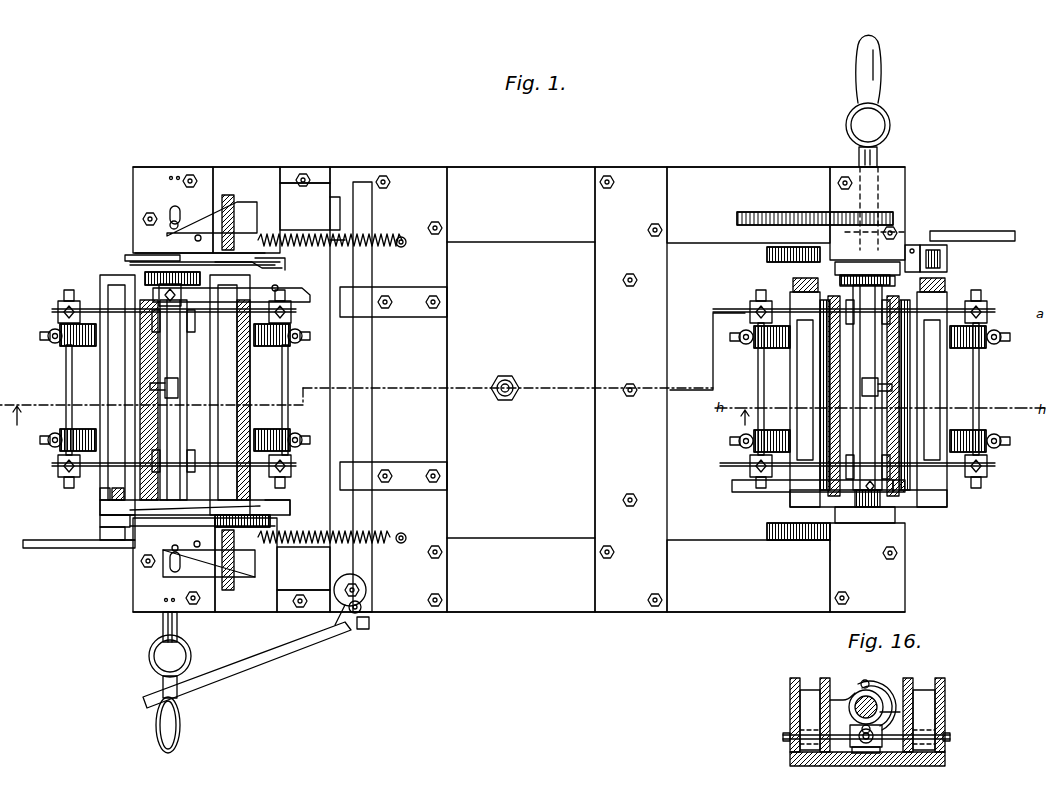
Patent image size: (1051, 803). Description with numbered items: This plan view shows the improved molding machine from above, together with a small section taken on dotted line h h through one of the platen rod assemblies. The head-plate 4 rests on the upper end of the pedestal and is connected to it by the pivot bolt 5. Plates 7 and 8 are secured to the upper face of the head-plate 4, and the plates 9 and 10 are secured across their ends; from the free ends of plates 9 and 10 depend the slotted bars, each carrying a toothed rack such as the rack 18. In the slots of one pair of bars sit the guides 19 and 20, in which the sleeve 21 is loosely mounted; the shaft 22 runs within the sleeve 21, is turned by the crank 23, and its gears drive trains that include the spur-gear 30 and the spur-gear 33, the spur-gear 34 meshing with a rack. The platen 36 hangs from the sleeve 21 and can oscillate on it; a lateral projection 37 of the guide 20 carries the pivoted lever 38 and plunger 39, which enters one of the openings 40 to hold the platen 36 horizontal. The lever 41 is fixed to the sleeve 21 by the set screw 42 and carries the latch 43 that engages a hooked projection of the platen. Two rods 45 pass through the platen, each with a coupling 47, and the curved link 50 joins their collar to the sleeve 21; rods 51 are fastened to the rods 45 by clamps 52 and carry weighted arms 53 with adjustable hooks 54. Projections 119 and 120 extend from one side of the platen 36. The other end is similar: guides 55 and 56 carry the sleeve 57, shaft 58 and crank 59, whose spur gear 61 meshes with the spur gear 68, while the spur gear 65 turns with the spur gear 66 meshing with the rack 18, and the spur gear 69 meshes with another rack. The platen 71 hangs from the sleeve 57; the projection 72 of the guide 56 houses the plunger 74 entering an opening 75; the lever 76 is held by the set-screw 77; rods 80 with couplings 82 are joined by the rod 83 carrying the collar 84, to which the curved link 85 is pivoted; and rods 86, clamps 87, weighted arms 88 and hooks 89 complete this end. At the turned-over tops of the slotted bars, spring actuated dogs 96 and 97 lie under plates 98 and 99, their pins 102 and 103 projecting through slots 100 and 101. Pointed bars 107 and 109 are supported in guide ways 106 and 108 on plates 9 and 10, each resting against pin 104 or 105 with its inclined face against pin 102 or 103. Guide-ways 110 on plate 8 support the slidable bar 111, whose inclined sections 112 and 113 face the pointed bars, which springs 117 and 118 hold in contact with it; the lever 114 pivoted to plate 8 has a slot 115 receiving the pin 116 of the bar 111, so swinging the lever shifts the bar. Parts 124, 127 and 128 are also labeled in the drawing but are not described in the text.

In FIG. 1, the head-plate 4 is at (521, 389).
In FIG. 1, the pivot bolt 5 is at (512, 378).
In FIG. 1, the plate 7 is at (631, 389).
In FIG. 1, the plate 8 is at (388, 389).
In FIG. 1, the plate 9 is at (530, 167).
In FIG. 1, the plate 10 is at (520, 614).
In FIG. 1, the toothed rack 18 is at (810, 540).
In FIG. 1, the guide 19 is at (125, 258).
In FIG. 1, the guide 20 is at (170, 520).
In FIG. 1, the sleeve 21 is at (160, 340).
In FIG. 1, the shaft 22 is at (180, 625).
In FIG. 1, the crank 23 is at (182, 722).
In FIG. 1, the spur-gear 30 is at (275, 255).
In FIG. 1, the spur-gear 33 is at (972, 228).
In FIG. 1, the spur-gear 34 is at (324, 534).
In FIG. 1, the platen 36 is at (100, 375).
In FIG. 1, the lateral projection 37 is at (100, 518).
In FIG. 1, the lever 38 is at (30, 545).
In FIG. 1, the plunger 39 is at (100, 492).
In FIG. 1, the openings 40 is at (112, 494).
In FIG. 1, the lever 41 is at (305, 294).
In FIG. 1, the set screw 42 is at (170, 306).
In FIG. 1, the latch 43 is at (272, 291).
In FIG. 1, the rods 45 is at (52, 310).
In FIG. 1, the coupling 47 is at (194, 318).
In FIG. 1, the curved link 50 is at (168, 380).
In FIG. 1, the rods 51 is at (66, 414).
In FIG. 1, the clamps 52 is at (64, 298).
In FIG. 1, the weighted arms 53 is at (75, 340).
In FIG. 1, the hook 54 is at (48, 333).
In FIG. 1, the guide 55 is at (872, 523).
In FIG. 1, the guide 56 is at (835, 268).
In FIG. 1, the sleeve 57 is at (1003, 420).
In FIG. 16, the sleeve 57 is at (860, 692).
In FIG. 1, the shaft 58 is at (878, 158).
In FIG. 16, the shaft 58 is at (884, 700).
In FIG. 1, the crank 59 is at (882, 60).
In FIG. 1, the spur gear 61 is at (892, 210).
In FIG. 1, the spur gear 65 is at (880, 390).
In FIG. 16, the spur gear 65 is at (880, 686).
In FIG. 1, the spur gear 66 is at (767, 530).
In FIG. 1, the spur gear 68 is at (815, 208).
In FIG. 1, the spur gear 69 is at (767, 254).
In FIG. 1, the platen 71 is at (947, 376).
In FIG. 16, the platen 71 is at (945, 708).
In FIG. 1, the lateral projection 72 is at (949, 258).
In FIG. 1, the plunger 74 is at (922, 246).
In FIG. 1, the openings 75 is at (793, 285).
In FIG. 1, the lever 76 is at (732, 488).
In FIG. 1, the set-screw 77 is at (880, 495).
In FIG. 1, the rods 80 is at (990, 312).
In FIG. 16, the rods 80 is at (950, 737).
In FIG. 1, the coupling 82 is at (850, 322).
In FIG. 16, the rod 83 is at (864, 748).
In FIG. 16, the collar 84 is at (880, 753).
In FIG. 16, the curved link 85 is at (890, 712).
In FIG. 1, the rods 86 is at (758, 374).
In FIG. 1, the clamps 87 is at (757, 304).
In FIG. 1, the weighted arms 88 is at (870, 389).
In FIG. 1, the hook 89 is at (743, 344).
In FIG. 1, the spring actuated dog 96 is at (160, 253).
In FIG. 1, the spring actuated dog 97 is at (168, 520).
In FIG. 1, the plate 98 is at (135, 191).
In FIG. 1, the plate 99 is at (135, 616).
In FIG. 1, the slot 100 is at (175, 206).
In FIG. 1, the slot 101 is at (174, 572).
In FIG. 1, the pin 102 is at (172, 226).
In FIG. 1, the pin 103 is at (172, 548).
In FIG. 1, the pin 104 is at (196, 240).
In FIG. 1, the pin 105 is at (197, 541).
In FIG. 1, the guide way 106 is at (305, 198).
In FIG. 1, the pointed bar 107 is at (212, 219).
In FIG. 1, the guide way 108 is at (303, 579).
In FIG. 1, the pointed bar 109 is at (209, 563).
In FIG. 1, the guide-ways 110 is at (398, 287).
In FIG. 1, the slidable bar 111 is at (370, 362).
In FIG. 1, the inclined section 112 is at (343, 230).
In FIG. 1, the inclined section 113 is at (360, 578).
In FIG. 1, the lever 114 is at (300, 658).
In FIG. 1, the slot 115 is at (362, 610).
In FIG. 1, the pin 116 is at (369, 626).
In FIG. 1, the spring 117 is at (404, 246).
In FIG. 1, the spring 118 is at (402, 533).
In FIG. 1, the projection 119 is at (285, 268).
In FIG. 1, the projection 120 is at (272, 500).
In FIG. 1, the slide bar 124 is at (130, 264).
In FIG. 1, the link 127 is at (219, 385).
In FIG. 1, the gear segment 128 is at (301, 517).